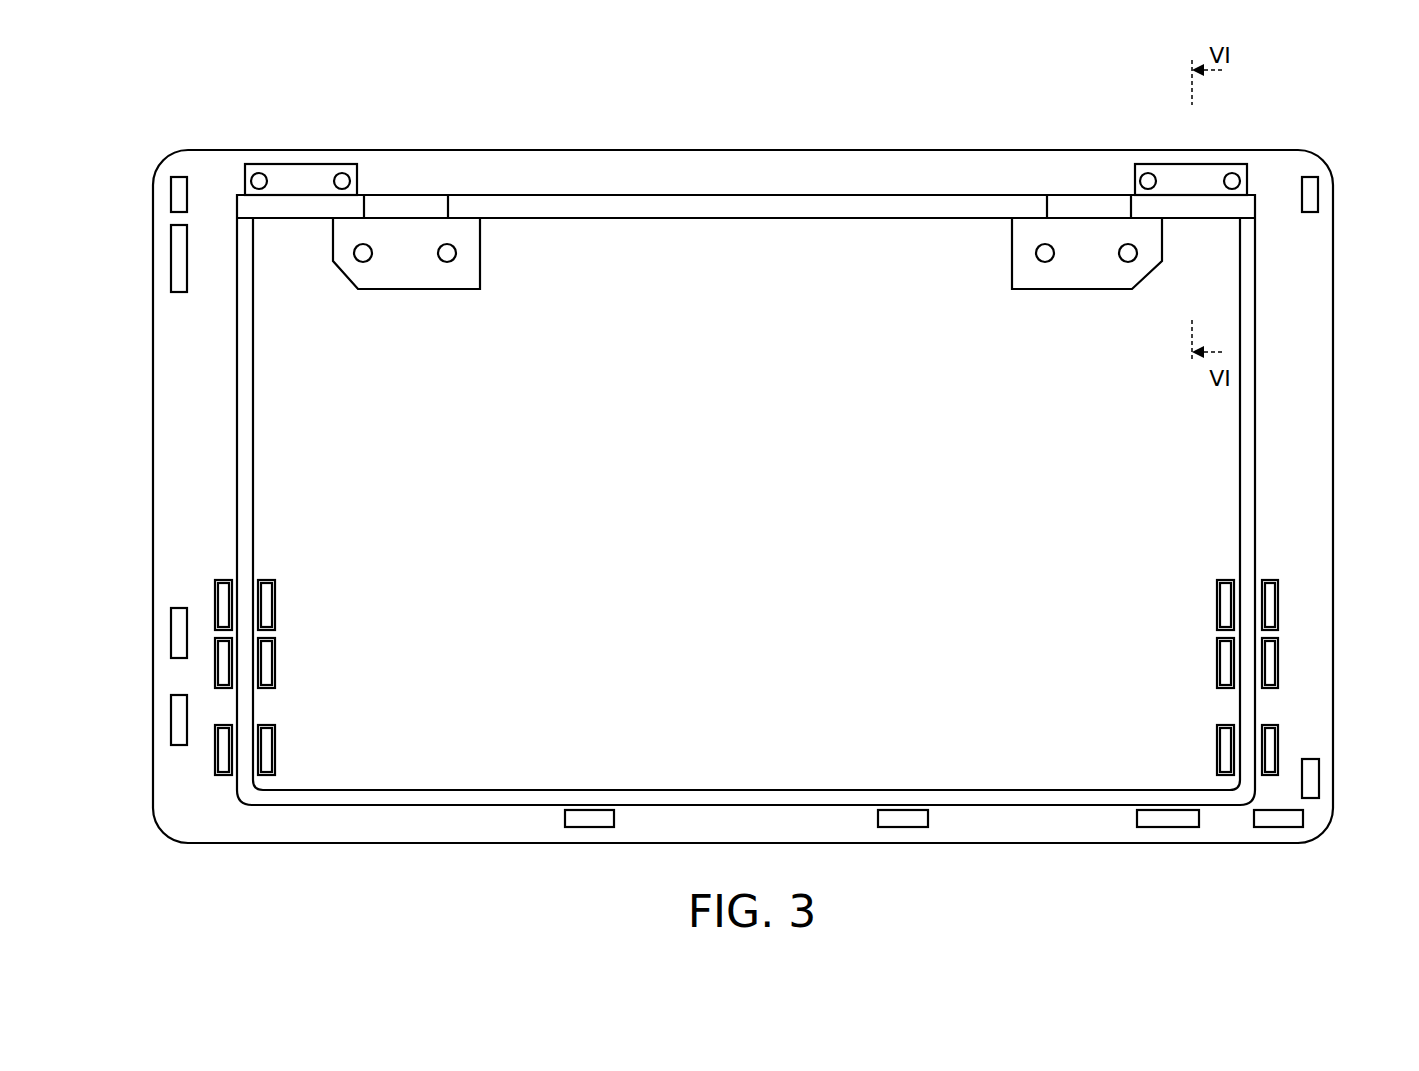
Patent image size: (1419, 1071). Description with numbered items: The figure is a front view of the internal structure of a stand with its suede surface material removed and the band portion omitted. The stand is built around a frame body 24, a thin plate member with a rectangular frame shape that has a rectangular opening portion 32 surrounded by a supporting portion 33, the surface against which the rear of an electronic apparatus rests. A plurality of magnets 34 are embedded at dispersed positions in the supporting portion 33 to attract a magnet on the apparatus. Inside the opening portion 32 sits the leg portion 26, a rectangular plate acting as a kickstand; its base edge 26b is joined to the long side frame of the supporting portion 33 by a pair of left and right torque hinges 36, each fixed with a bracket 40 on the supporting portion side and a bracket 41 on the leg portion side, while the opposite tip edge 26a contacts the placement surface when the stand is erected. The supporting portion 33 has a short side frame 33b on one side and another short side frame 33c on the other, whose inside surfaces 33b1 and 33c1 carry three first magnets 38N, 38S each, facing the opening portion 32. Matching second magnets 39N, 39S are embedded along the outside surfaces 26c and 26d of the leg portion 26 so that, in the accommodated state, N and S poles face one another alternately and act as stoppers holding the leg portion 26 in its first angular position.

The frame body 24 is at (941, 152).
The leg portion 26 is at (752, 246).
The tip edge 26a is at (962, 798).
The base edge 26b is at (626, 218).
The outside surface 26c is at (250, 355).
The outside surface 26d is at (1243, 525).
The opening portion 32 is at (688, 196).
The supporting portion 33 is at (857, 178).
The short side frame 33b is at (203, 443).
The inside surface 33b1 is at (240, 472).
The short side frame 33c is at (1290, 443).
The inside surface 33c1 is at (1255, 468).
The magnet 34 is at (171, 265).
The torque hinge 36 is at (420, 189).
The first magnet 38N is at (230, 580).
The first magnet 38S is at (232, 688).
The second magnet 39N is at (275, 660).
The second magnet 39S is at (275, 608).
The bracket 40 is at (290, 178).
The bracket 41 is at (447, 287).